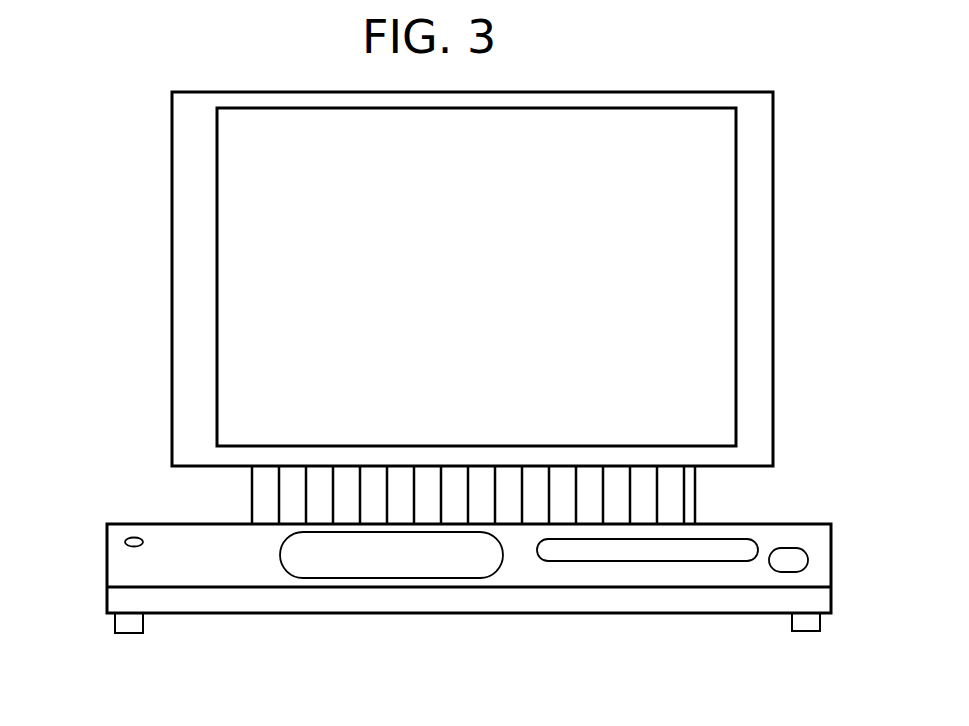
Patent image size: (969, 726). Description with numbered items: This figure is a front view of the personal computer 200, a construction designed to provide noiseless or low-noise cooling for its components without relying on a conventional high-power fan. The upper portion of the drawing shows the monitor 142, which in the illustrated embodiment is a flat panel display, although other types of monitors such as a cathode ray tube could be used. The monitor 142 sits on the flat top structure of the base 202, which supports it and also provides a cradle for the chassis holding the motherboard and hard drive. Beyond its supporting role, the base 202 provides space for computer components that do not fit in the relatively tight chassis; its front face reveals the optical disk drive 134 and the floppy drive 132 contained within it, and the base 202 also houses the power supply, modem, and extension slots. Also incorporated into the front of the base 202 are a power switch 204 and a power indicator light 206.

The computer 200 is at (150, 88).
The monitor 142 is at (724, 92).
The base 202 is at (265, 616).
The optical disk drive 134 is at (420, 563).
The floppy drive 132 is at (630, 566).
The power switch 204 is at (788, 547).
The power indicator light 206 is at (136, 540).